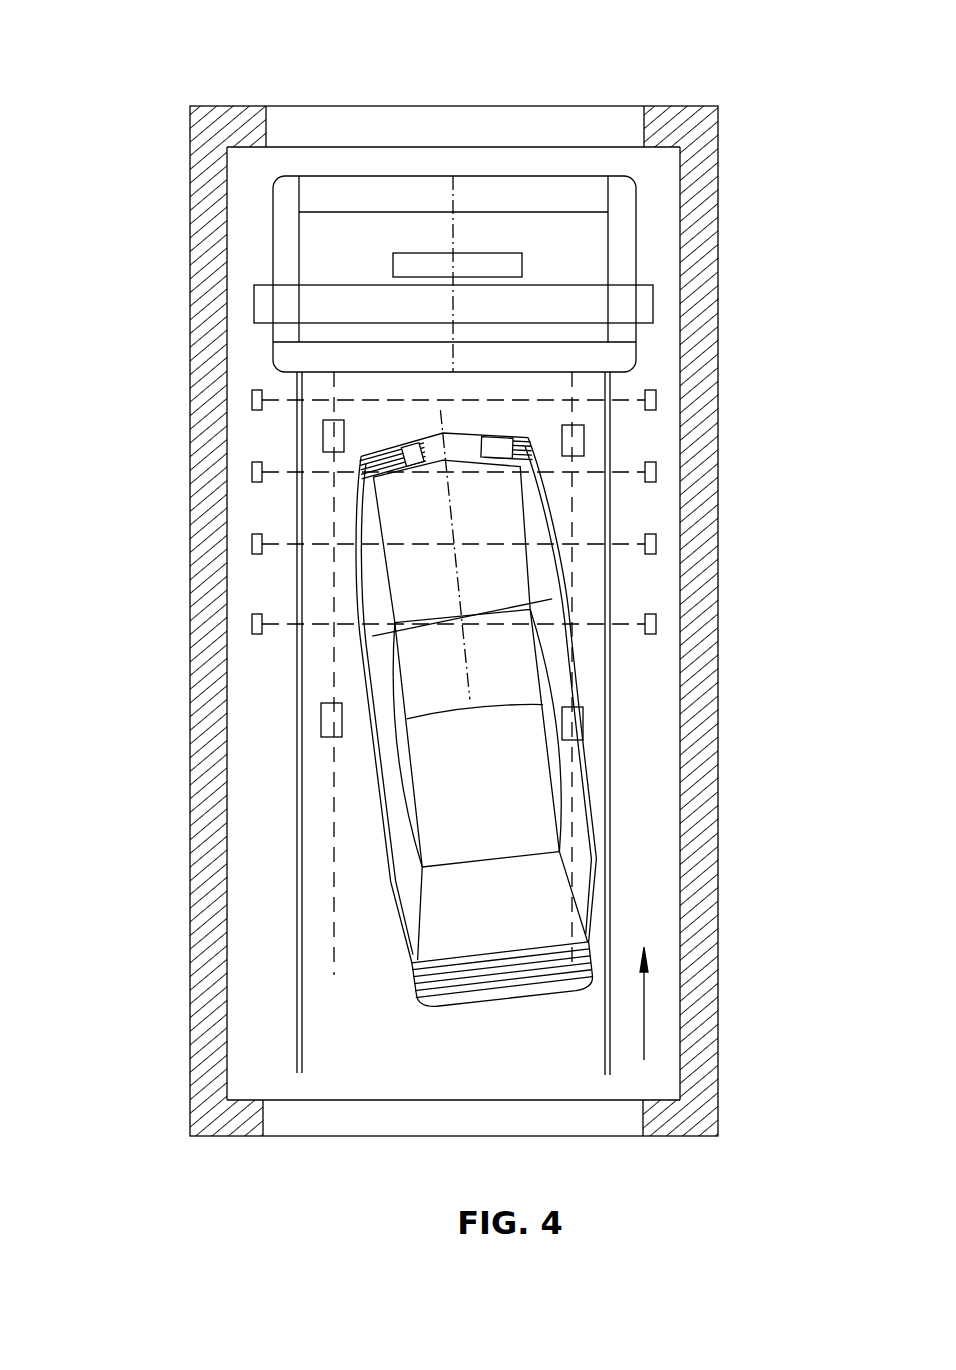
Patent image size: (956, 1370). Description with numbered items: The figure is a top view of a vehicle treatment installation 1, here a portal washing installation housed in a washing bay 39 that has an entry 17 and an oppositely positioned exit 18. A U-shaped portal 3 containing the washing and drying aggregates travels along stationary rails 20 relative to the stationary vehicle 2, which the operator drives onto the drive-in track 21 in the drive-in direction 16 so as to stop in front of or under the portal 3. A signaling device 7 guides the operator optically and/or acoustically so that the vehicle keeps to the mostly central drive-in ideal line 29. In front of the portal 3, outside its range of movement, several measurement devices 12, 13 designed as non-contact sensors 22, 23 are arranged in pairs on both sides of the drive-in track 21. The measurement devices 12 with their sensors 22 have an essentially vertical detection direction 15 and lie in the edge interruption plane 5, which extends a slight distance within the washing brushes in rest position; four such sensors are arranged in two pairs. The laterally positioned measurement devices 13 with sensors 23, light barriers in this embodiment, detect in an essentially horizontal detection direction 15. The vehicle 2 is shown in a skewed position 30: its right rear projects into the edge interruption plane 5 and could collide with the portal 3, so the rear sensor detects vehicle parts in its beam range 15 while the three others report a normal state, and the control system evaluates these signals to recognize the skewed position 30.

The treatment installation 1 is at (216, 86).
The vehicle 2 is at (475, 736).
The portal 3 is at (296, 252).
The edge interruption plane 5 is at (335, 835).
The signaling device 7 is at (480, 265).
The measurement device 12 is at (447, 588).
The sensor 22 is at (323, 432).
The measurement device 13 is at (545, 512).
The sensor 23 is at (545, 512).
The detection direction 15 is at (369, 665).
The drive-in direction 16 is at (645, 1002).
The entry 17 is at (313, 1118).
The exit 18 is at (340, 120).
The rails 20 is at (295, 942).
The drive-in track 21 is at (477, 1058).
The drive-in ideal line 29 is at (452, 305).
The skewed position 30 is at (470, 665).
The washing bay 39 is at (700, 222).